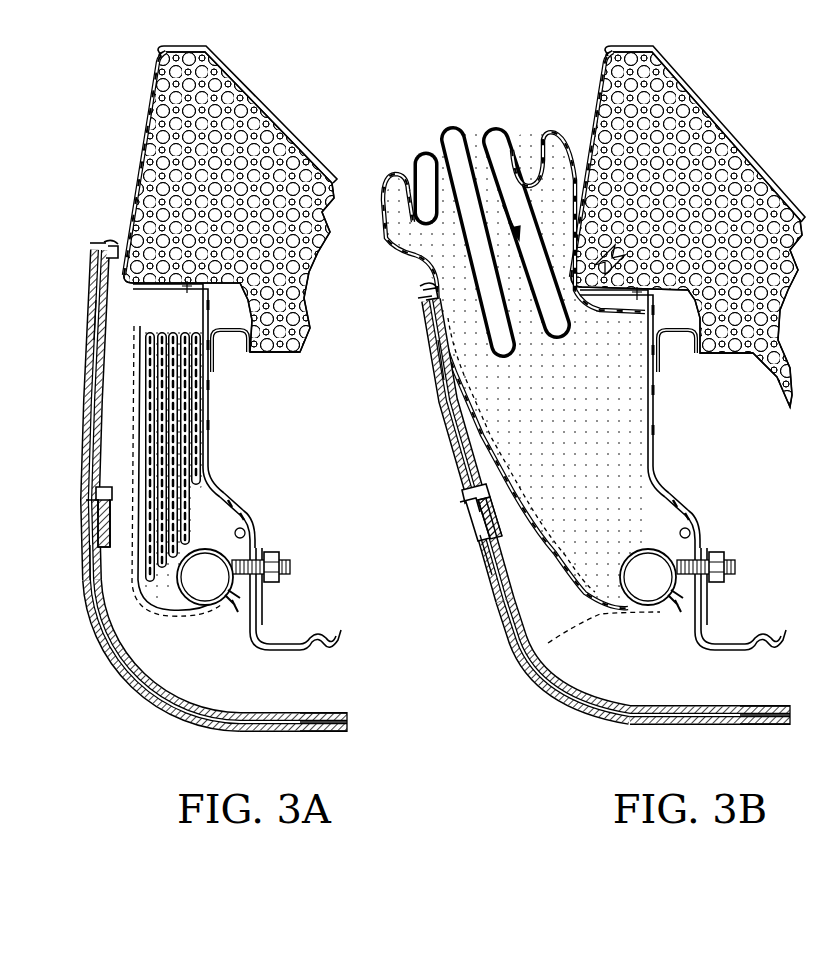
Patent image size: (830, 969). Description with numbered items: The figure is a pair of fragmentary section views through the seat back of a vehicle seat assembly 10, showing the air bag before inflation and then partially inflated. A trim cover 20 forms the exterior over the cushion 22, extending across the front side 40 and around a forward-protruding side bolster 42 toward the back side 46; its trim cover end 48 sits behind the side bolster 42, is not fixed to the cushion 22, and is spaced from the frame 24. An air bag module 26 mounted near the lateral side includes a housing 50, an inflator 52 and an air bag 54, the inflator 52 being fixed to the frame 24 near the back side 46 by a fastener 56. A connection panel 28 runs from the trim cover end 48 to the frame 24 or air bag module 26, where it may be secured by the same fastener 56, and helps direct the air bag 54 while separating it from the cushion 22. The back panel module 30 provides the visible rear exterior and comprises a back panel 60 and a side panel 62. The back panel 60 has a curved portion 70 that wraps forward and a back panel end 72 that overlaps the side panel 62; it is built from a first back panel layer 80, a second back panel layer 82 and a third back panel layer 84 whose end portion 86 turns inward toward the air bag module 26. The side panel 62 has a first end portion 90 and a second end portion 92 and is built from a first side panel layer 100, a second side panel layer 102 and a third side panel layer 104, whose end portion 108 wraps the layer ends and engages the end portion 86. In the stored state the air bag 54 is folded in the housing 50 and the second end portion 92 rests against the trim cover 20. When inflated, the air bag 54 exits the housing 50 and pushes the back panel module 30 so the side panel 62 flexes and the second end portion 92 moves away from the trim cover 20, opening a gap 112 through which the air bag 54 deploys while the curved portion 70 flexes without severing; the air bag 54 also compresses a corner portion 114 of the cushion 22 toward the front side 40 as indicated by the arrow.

In FIG. 3A, the seat assembly 10 is at (316, 102).
In FIG. 3B, the seat assembly 10 is at (760, 100).
In FIG. 3A, the trim cover 20 is at (237, 213).
In FIG. 3B, the trim cover 20 is at (688, 237).
In FIG. 3A, the cushion 22 is at (284, 348).
In FIG. 3B, the cushion 22 is at (770, 352).
In FIG. 3A, the frame 24 is at (258, 535).
In FIG. 3B, the frame 24 is at (703, 535).
In FIG. 3A, the air bag module 26 is at (190, 640).
In FIG. 3B, the air bag module 26 is at (625, 640).
In FIG. 3A, the connection panel 28 is at (226, 493).
In FIG. 3B, the connection panel 28 is at (671, 500).
In FIG. 3A, the back panel module 30 is at (166, 733).
In FIG. 3B, the back panel module 30 is at (604, 727).
In FIG. 3A, the front side 40 is at (232, 57).
In FIG. 3B, the front side 40 is at (705, 134).
In FIG. 3A, the side bolster 42 is at (248, 124).
In FIG. 3A, the back side 46 is at (289, 748).
In FIG. 3B, the back side 46 is at (722, 742).
In FIG. 3A, the trim cover end 48 is at (239, 283).
In FIG. 3B, the trim cover end 48 is at (680, 292).
In FIG. 3A, the housing 50 is at (134, 330).
In FIG. 3B, the housing 50 is at (598, 636).
In FIG. 3A, the inflator 52 is at (208, 580).
In FIG. 3B, the inflator 52 is at (651, 580).
In FIG. 3A, the air bag 54 is at (146, 420).
In FIG. 3B, the air bag 54 is at (422, 150).
In FIG. 3A, the fastener 56 is at (292, 567).
In FIG. 3B, the fastener 56 is at (739, 567).
In FIG. 3A, the back panel 60 is at (285, 698).
In FIG. 3B, the back panel 60 is at (712, 694).
In FIG. 3A, the side panel 62 is at (82, 372).
In FIG. 3B, the side panel 62 is at (422, 425).
In FIG. 3A, the curved portion 70 is at (112, 681).
In FIG. 3B, the curved portion 70 is at (538, 701).
In FIG. 3A, the back panel end 72 is at (78, 536).
In FIG. 3B, the back panel end 72 is at (460, 545).
In FIG. 3A, the first back panel layer 80 is at (347, 714).
In FIG. 3B, the first back panel layer 80 is at (792, 708).
In FIG. 3A, the second back panel layer 82 is at (350, 724).
In FIG. 3B, the second back panel layer 82 is at (793, 718).
In FIG. 3A, the third back panel layer 84 is at (345, 732).
In FIG. 3B, the third back panel layer 84 is at (790, 726).
In FIG. 3A, the end portion 86 is at (88, 516).
In FIG. 3B, the end portion 86 is at (465, 518).
In FIG. 3A, the first end portion 90 is at (115, 549).
In FIG. 3B, the first end portion 90 is at (506, 540).
In FIG. 3A, the second end portion 92 is at (99, 250).
In FIG. 3B, the second end portion 92 is at (411, 313).
In FIG. 3A, the first side panel layer 100 is at (120, 273).
In FIG. 3B, the first side panel layer 100 is at (432, 286).
In FIG. 3A, the second side panel layer 102 is at (112, 244).
In FIG. 3B, the second side panel layer 102 is at (428, 290).
In FIG. 3A, the third side panel layer 104 is at (92, 250).
In FIG. 3B, the third side panel layer 104 is at (420, 300).
In FIG. 3A, the end portion 108 is at (94, 512).
In FIG. 3B, the end portion 108 is at (470, 508).
In FIG. 3B, the gap 112 is at (455, 146).
In FIG. 3B, the corner portion 114 is at (567, 270).